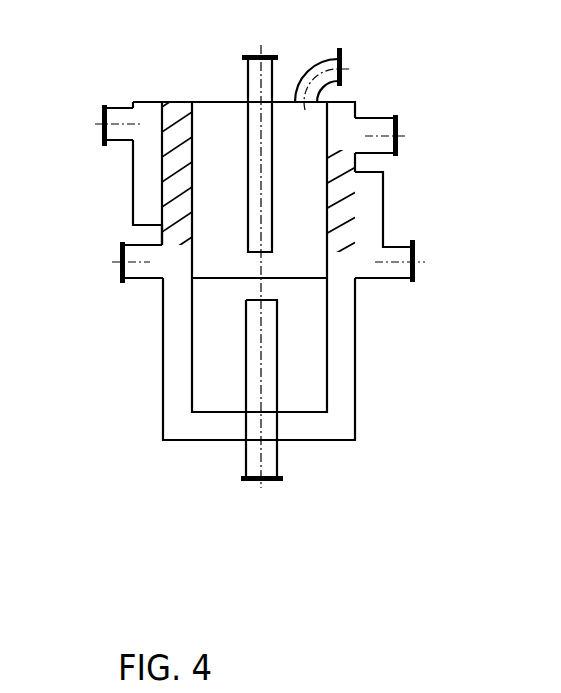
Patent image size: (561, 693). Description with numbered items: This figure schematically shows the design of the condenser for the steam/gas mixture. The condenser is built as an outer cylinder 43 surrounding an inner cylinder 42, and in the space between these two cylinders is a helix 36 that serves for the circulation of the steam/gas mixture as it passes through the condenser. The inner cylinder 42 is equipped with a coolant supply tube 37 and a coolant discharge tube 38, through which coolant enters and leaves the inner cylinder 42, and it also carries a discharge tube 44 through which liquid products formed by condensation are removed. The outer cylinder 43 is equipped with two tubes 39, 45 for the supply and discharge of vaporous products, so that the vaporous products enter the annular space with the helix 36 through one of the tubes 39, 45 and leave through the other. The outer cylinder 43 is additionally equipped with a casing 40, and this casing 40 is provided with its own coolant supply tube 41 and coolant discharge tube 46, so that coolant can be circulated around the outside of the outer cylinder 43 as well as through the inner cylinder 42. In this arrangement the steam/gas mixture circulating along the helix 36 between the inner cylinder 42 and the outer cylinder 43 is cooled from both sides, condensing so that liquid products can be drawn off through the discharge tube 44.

The helix 36 is at (180, 112).
The coolant supply tube 37 is at (268, 72).
The coolant discharge tube 38 is at (378, 36).
The tube for supply and discharge of vaporous products 39 is at (370, 133).
The casing 40 is at (383, 200).
The coolant supply tube 41 is at (396, 275).
The inner cylinder 42 is at (327, 365).
The outer cylinder 43 is at (360, 412).
The discharge tube for liquid products 44 is at (268, 466).
The tube for supply and discharge of vaporous products 45 is at (137, 271).
The coolant discharge tube 46 is at (128, 122).